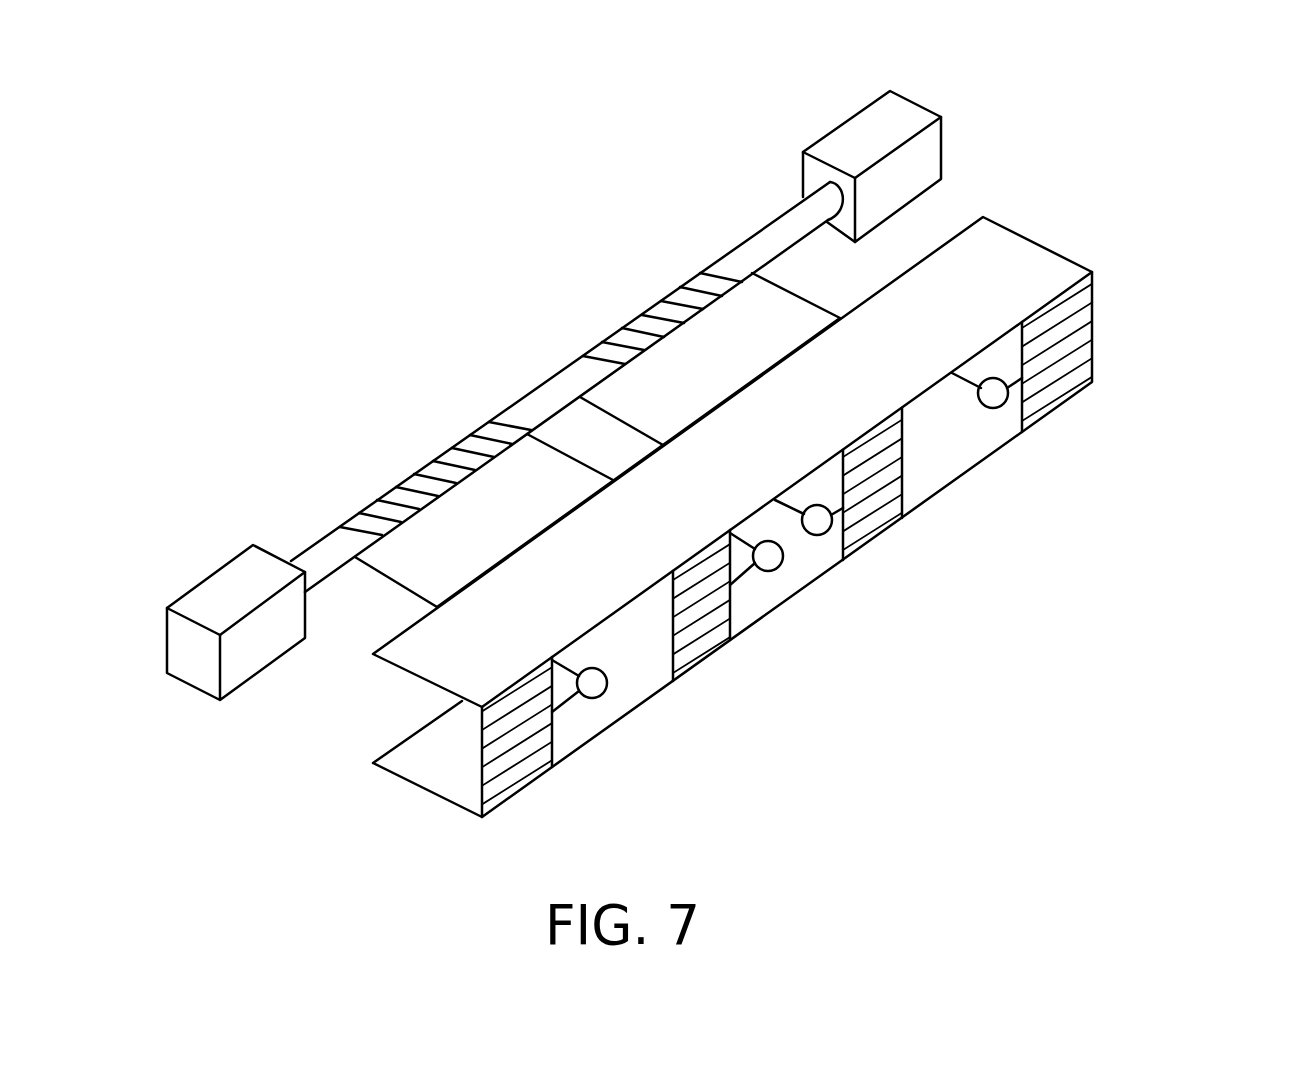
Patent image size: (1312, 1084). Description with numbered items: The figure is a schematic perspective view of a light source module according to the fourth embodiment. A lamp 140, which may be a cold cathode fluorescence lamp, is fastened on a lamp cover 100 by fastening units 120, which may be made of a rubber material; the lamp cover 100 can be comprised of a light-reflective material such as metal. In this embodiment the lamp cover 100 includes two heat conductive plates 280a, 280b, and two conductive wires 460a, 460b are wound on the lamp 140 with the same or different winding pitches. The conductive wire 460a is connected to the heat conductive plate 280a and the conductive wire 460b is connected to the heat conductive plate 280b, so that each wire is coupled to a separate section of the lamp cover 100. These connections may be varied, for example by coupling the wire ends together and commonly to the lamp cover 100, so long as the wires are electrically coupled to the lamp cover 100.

The lamp cover 100 is at (1030, 273).
The fastening unit 120 is at (902, 117).
The lamp 140 is at (776, 236).
The conductive wire 460a is at (793, 293).
The conductive wire 460b is at (403, 587).
The heat conductive plate 280a is at (1067, 400).
The heat conductive plate 280b is at (707, 657).